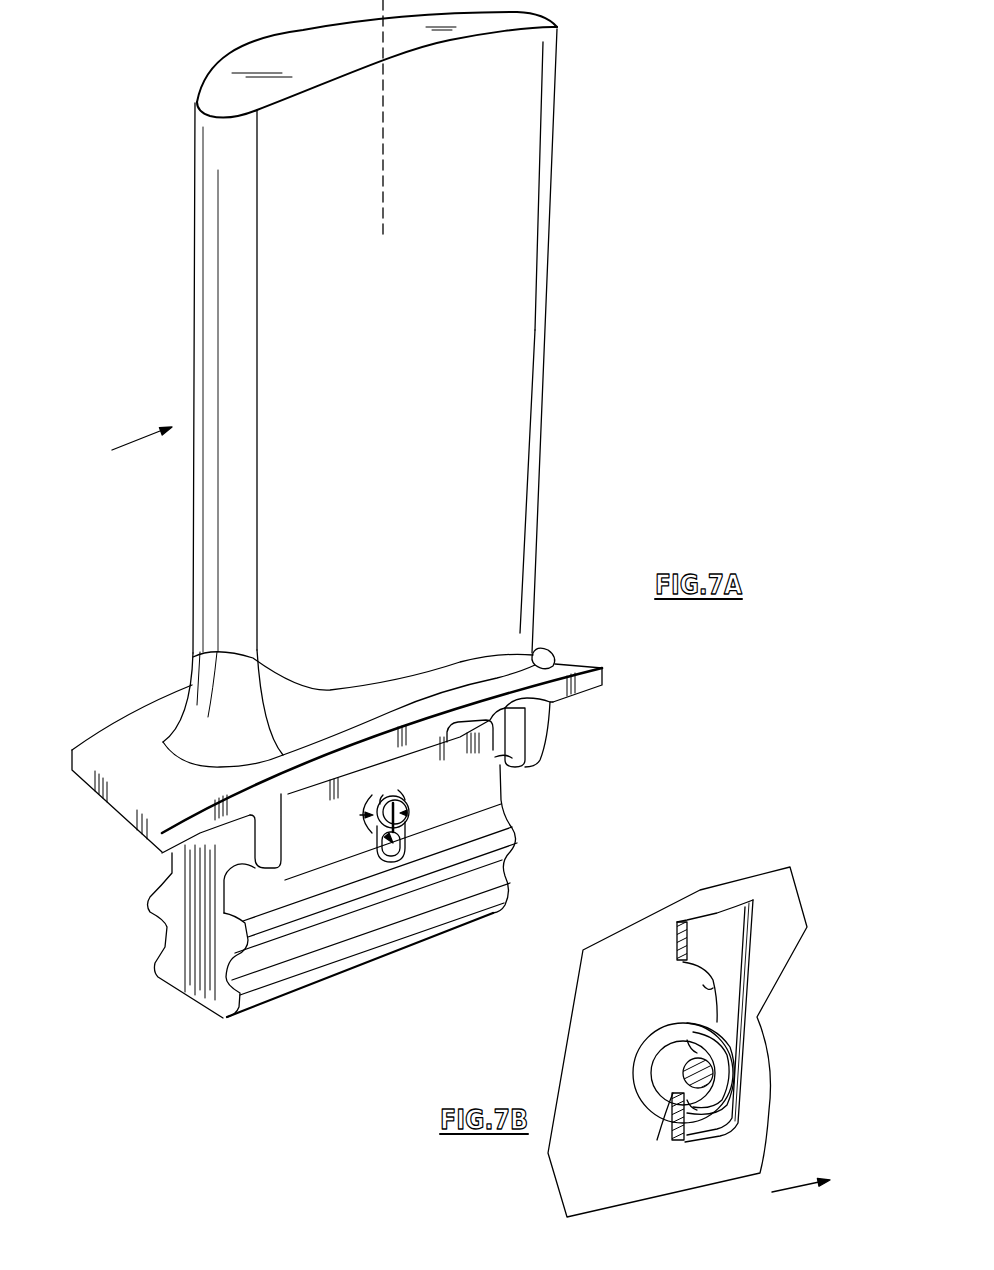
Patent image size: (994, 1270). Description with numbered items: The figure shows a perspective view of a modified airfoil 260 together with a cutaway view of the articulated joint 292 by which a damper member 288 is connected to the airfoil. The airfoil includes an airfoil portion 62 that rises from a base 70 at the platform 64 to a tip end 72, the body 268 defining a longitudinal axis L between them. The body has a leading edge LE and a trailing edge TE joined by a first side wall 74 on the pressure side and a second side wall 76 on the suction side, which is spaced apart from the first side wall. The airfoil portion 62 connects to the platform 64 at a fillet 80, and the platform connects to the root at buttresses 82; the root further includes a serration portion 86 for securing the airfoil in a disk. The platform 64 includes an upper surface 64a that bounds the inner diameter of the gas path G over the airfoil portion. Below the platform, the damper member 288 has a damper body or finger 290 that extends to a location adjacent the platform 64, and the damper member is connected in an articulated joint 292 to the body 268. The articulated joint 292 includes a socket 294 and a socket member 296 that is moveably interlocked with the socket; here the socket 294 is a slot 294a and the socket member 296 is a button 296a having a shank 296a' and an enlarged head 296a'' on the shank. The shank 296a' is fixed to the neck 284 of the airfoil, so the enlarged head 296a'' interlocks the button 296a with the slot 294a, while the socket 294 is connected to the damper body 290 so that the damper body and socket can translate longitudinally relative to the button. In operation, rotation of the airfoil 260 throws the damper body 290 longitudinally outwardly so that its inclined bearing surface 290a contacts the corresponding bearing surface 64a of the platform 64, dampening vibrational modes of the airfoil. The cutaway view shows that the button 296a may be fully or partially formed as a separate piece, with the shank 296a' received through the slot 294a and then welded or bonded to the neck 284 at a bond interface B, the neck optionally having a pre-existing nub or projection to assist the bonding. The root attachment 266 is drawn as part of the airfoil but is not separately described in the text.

In FIG. 7A, the airfoil portion 62 is at (516, 363).
In FIG. 7A, the platform 64 is at (570, 636).
In FIG. 7A, the upper surface 64a is at (473, 658).
In FIG. 7A, the base 70 is at (147, 747).
In FIG. 7A, the tip end 72 is at (218, 88).
In FIG. 7A, the first side wall 74 is at (530, 110).
In FIG. 7A, the second side wall 76 is at (527, 15).
In FIG. 7A, the fillet 80 is at (203, 703).
In FIG. 7A, the buttresses 82 is at (272, 855).
In FIG. 7A, the serration portion 86 is at (250, 965).
In FIG. 7A, the modified airfoil 260 is at (122, 566).
In FIG. 7A, the attachment 266 is at (505, 870).
In FIG. 7A, the body 268 is at (520, 487).
In FIG. 7A, the neck 284 is at (485, 800).
In FIG. 7B, the neck 284 is at (640, 1103).
In FIG. 7A, the damper member 288 is at (350, 849).
In FIG. 7A, the damper body 290 is at (503, 700).
In FIG. 7A, the inclined bearing surface 290a is at (253, 783).
In FIG. 7A, the articulated joint 292 is at (363, 817).
In FIG. 7A, the socket 294 is at (403, 833).
In FIG. 7A, the slot 294a is at (391, 862).
In FIG. 7B, the slot 294a is at (708, 988).
In FIG. 7A, the socket member 296 is at (407, 800).
In FIG. 7A, the button 296a is at (341, 716).
In FIG. 7B, the button 296a is at (753, 1061).
In FIG. 7A, the shank 296a' is at (331, 717).
In FIG. 7B, the shank 296a' is at (641, 1015).
In FIG. 7A, the enlarged head 296a'' is at (410, 715).
In FIG. 7B, the enlarged head 296a'' is at (755, 1115).
In FIG. 7A, the longitudinal axis L is at (383, 163).
In FIG. 7A, the leading edge LE is at (182, 255).
In FIG. 7A, the trailing edge TE is at (563, 218).
In FIG. 7A, the gas path G is at (125, 445).
In FIG. 7B, the gas path G is at (793, 1192).
In FIG. 7B, the bond interface B is at (657, 1062).